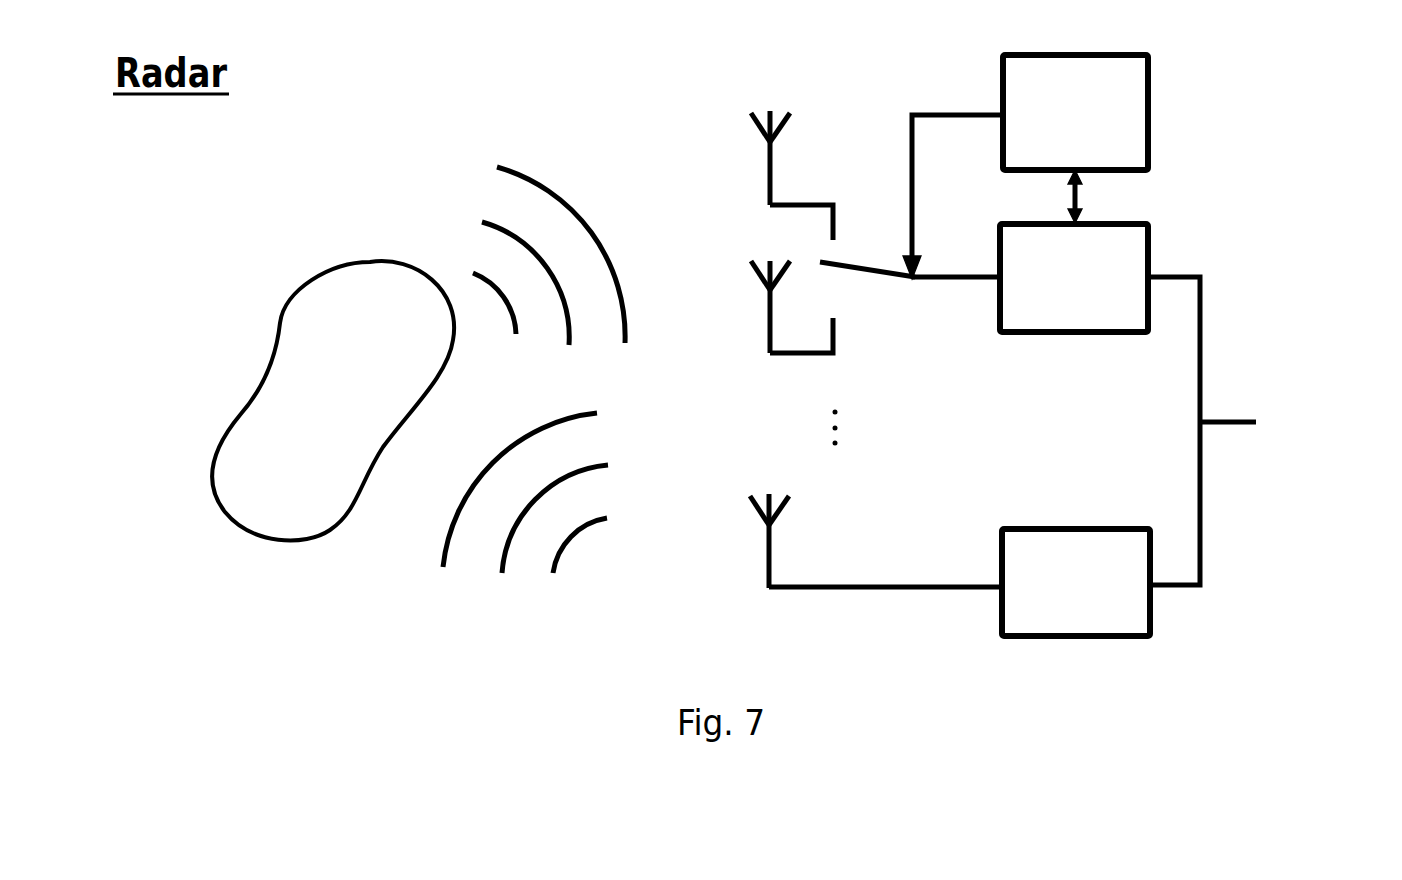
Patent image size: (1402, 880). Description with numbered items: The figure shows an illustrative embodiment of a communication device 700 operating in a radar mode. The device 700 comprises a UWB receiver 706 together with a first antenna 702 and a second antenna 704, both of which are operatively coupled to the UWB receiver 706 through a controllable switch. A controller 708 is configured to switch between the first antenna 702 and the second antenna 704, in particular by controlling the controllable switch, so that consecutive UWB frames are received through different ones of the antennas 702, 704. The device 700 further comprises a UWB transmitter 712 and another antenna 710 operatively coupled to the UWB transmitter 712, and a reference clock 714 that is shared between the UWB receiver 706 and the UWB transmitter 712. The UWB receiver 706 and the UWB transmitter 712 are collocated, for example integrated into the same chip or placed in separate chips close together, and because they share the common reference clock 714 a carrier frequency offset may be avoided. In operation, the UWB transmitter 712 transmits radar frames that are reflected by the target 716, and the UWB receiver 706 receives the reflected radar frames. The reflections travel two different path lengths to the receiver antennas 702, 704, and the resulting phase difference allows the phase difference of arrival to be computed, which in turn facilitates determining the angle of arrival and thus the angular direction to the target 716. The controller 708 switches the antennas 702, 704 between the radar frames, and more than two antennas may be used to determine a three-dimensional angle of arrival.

The communication device 700 is at (580, 95).
The first antenna 702 is at (767, 150).
The second antenna 704 is at (767, 308).
The UWB receiver 706 is at (1152, 245).
The controller 708 is at (1151, 110).
The another antenna 710 is at (767, 539).
The UWB transmitter 712 is at (1155, 608).
The reference clock 714 is at (1355, 403).
The target 716 is at (268, 393).